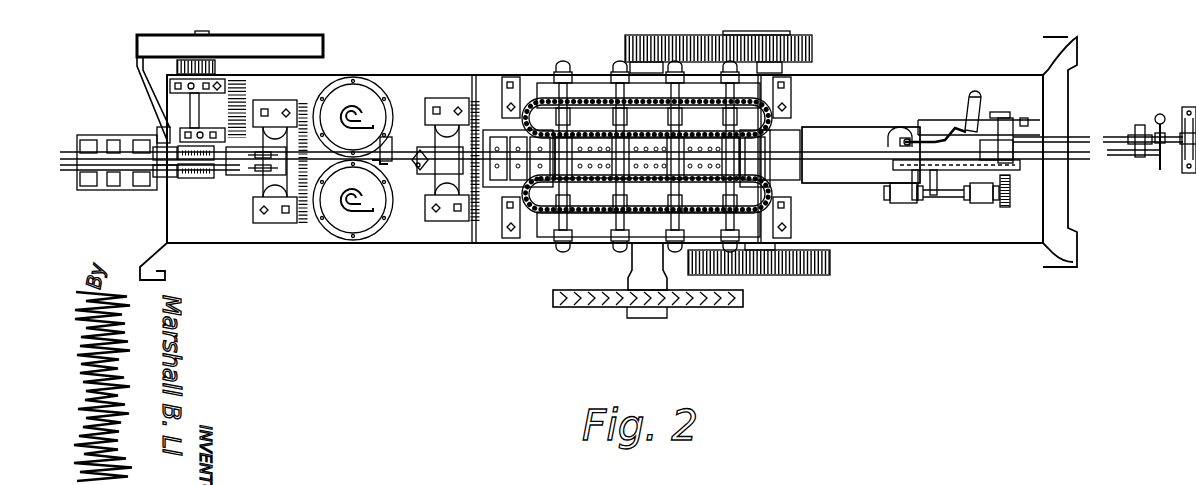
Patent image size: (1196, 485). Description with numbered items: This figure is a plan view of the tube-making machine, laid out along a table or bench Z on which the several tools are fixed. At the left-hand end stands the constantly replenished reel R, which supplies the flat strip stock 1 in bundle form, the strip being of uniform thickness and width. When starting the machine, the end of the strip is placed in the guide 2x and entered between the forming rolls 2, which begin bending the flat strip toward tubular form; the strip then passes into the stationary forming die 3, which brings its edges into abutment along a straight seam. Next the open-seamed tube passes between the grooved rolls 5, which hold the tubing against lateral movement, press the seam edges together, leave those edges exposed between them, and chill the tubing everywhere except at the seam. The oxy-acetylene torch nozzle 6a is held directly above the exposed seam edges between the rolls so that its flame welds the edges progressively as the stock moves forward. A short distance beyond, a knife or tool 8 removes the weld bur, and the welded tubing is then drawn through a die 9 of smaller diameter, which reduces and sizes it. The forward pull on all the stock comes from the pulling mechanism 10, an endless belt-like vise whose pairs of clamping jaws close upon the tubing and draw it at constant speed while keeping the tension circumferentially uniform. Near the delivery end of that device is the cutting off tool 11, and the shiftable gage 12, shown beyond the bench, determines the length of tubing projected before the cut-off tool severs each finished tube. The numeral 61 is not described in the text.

The reel R is at (97, 156).
The strip stock 1 is at (128, 162).
The guide 2x is at (163, 174).
The forming rolls 2 is at (197, 178).
The forming die 3 is at (264, 162).
The holding, pressing and chilling rolls 5 is at (356, 95).
The burner tip or nozzle 6a is at (373, 163).
The guide bracket 61 is at (388, 157).
The knife or bur-removing tool 8 is at (418, 166).
The die 9 is at (440, 160).
The pulling mechanism 10 is at (641, 160).
The table or bench Z is at (861, 131).
The cutting off tool 11 is at (1003, 225).
The gage 12 is at (1163, 158).